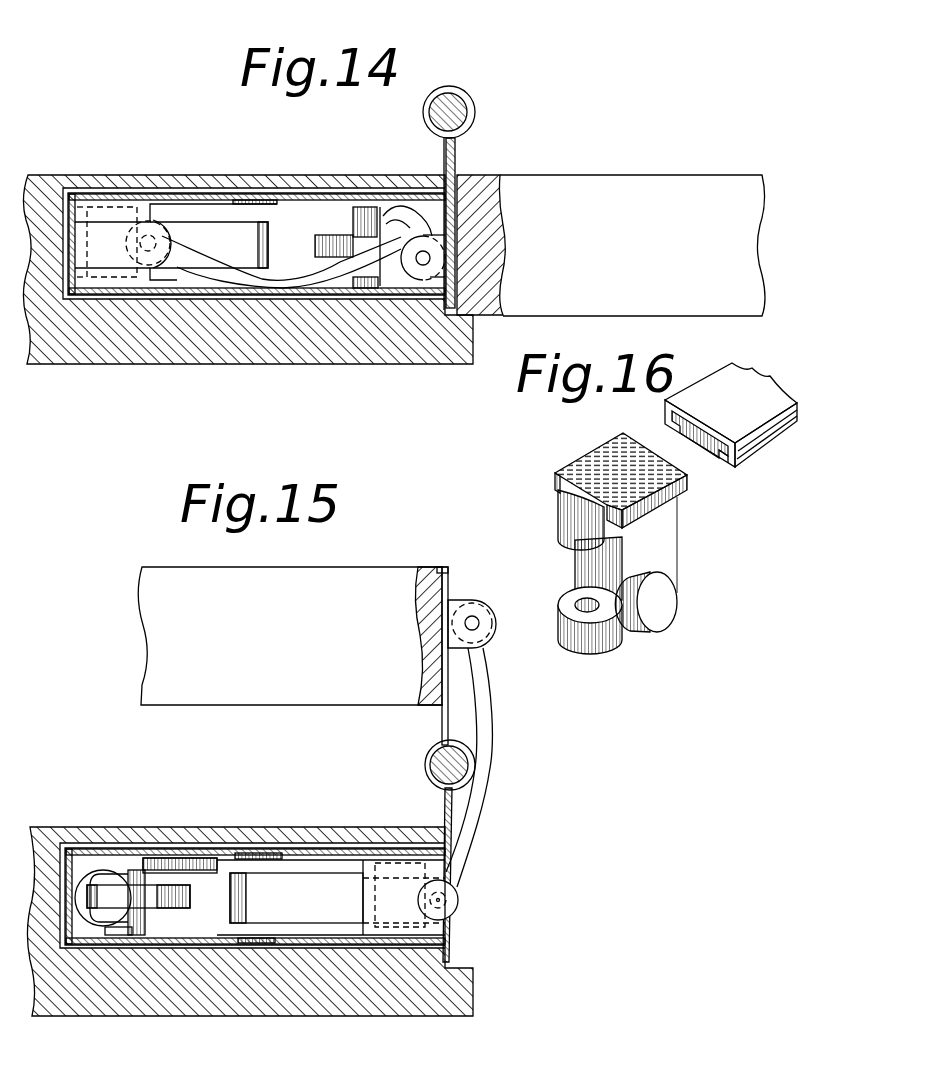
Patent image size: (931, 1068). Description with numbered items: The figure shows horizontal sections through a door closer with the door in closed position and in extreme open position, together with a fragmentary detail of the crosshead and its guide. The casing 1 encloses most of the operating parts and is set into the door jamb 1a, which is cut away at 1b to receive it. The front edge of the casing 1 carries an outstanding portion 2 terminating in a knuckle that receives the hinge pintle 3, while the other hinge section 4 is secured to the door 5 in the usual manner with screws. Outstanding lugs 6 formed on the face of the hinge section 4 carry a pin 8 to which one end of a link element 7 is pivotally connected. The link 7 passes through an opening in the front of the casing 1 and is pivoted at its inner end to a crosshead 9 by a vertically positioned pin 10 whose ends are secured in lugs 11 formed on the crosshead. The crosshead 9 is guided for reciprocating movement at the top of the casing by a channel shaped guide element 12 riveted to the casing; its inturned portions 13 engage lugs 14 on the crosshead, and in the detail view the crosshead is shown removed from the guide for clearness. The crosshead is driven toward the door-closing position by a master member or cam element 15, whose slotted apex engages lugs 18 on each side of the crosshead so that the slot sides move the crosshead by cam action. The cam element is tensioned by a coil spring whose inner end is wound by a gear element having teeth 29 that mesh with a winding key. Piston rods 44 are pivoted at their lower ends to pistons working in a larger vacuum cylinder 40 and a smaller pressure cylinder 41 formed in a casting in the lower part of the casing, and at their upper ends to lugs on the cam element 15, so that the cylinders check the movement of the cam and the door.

In FIG. 14, the casing 1 is at (158, 195).
In FIG. 15, the casing 1 is at (183, 845).
In FIG. 14, the door jamb 1a is at (127, 348).
In FIG. 15, the door jamb 1a is at (113, 997).
In FIG. 14, the cut-away portion of door jamb 1b is at (80, 189).
In FIG. 15, the cut-away portion of door jamb 1b is at (75, 845).
In FIG. 14, the outstanding portion 2 is at (444, 195).
In FIG. 15, the outstanding portion 2 is at (444, 808).
In FIG. 14, the hinge pintle 3 is at (455, 108).
In FIG. 15, the hinge pintle 3 is at (440, 768).
In FIG. 14, the hinge section 4 is at (458, 163).
In FIG. 15, the hinge section 4 is at (449, 565).
In FIG. 14, the door 5 is at (608, 192).
In FIG. 15, the door 5 is at (333, 692).
In FIG. 14, the outstanding lugs 6 is at (446, 272).
In FIG. 15, the outstanding lugs 6 is at (457, 598).
In FIG. 14, the link element 7 is at (279, 274).
In FIG. 15, the link element 7 is at (489, 697).
In FIG. 14, the pin 8 is at (426, 257).
In FIG. 15, the pin 8 is at (475, 621).
In FIG. 14, the crosshead 9 is at (107, 242).
In FIG. 15, the crosshead 9 is at (404, 895).
In FIG. 16, the crosshead 9 is at (612, 625).
In FIG. 14, the vertically positioned pin 10 is at (156, 244).
In FIG. 15, the vertically positioned pin 10 is at (460, 892).
In FIG. 16, the lugs 11 is at (567, 513).
In FIG. 16, the channel shaped guide element 12 is at (714, 403).
In FIG. 16, the inturned portions 13 is at (722, 455).
In FIG. 14, the lugs 14 is at (105, 275).
In FIG. 15, the lugs 14 is at (447, 932).
In FIG. 16, the lugs 14 is at (708, 348).
In FIG. 14, the cam element 15 is at (272, 208).
In FIG. 15, the cam element 15 is at (284, 856).
In FIG. 15, the lugs 18 is at (358, 918).
In FIG. 16, the lugs 18 is at (666, 612).
In FIG. 15, the teeth 29 is at (203, 858).
In FIG. 14, the cylinder 40 is at (386, 213).
In FIG. 15, the cylinder 41 is at (99, 870).
In FIG. 14, the piston rods 44 is at (353, 248).
In FIG. 15, the piston rods 44 is at (150, 900).